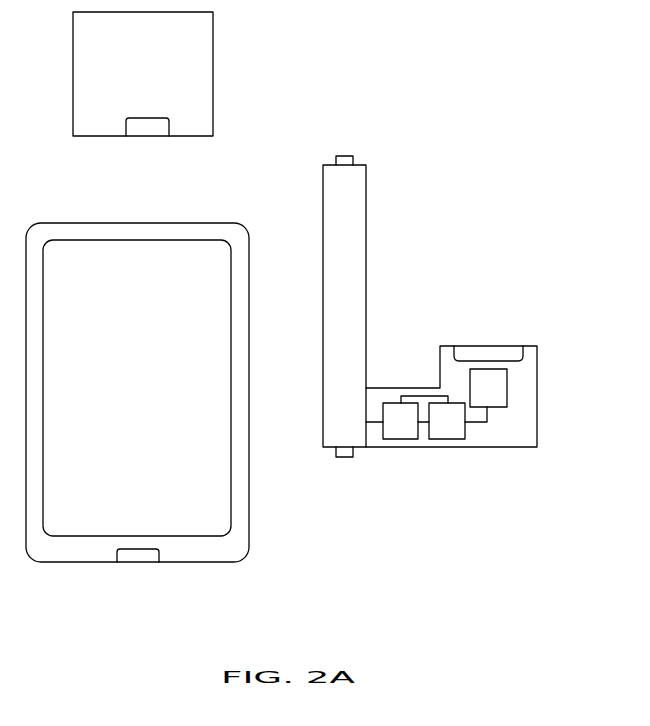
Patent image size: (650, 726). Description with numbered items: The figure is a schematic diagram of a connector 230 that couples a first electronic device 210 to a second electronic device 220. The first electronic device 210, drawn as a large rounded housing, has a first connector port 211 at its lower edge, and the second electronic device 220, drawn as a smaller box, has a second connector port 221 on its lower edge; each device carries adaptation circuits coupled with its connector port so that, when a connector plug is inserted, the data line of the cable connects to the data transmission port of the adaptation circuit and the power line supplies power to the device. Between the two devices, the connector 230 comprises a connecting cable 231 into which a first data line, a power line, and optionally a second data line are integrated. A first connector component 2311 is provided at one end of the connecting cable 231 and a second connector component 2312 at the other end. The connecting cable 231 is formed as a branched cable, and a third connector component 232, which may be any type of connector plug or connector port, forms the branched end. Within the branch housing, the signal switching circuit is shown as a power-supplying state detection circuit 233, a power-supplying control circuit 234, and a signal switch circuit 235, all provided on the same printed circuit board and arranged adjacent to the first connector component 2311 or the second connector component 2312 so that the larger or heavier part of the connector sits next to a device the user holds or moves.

The first electronic device 210 is at (163, 364).
The first connector port 211 is at (150, 562).
The second electronic device 220 is at (157, 60).
The second connector port 221 is at (160, 135).
The connector 230 is at (431, 311).
The connecting cable 231 is at (368, 263).
The first connector component 2311 is at (345, 460).
The second connector component 2312 is at (340, 156).
The third connector component 232 is at (492, 346).
The power-supplying state detection circuit 233 is at (503, 396).
The power-supplying control circuit 234 is at (461, 432).
The signal switch circuit 235 is at (415, 432).